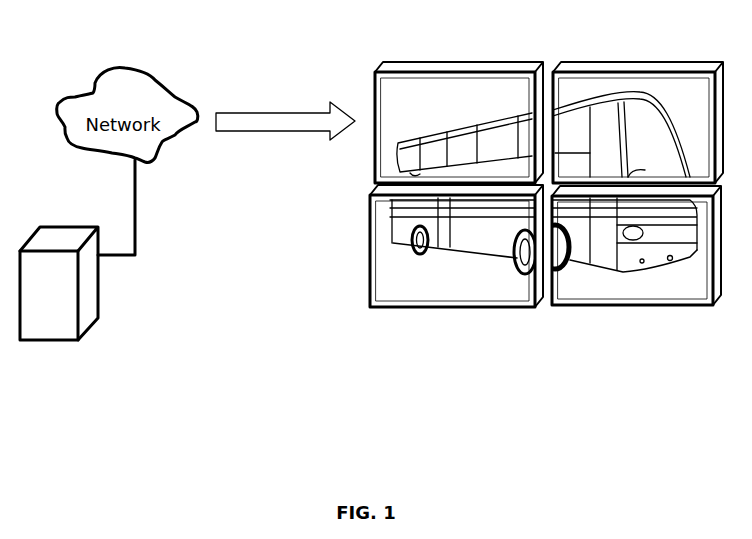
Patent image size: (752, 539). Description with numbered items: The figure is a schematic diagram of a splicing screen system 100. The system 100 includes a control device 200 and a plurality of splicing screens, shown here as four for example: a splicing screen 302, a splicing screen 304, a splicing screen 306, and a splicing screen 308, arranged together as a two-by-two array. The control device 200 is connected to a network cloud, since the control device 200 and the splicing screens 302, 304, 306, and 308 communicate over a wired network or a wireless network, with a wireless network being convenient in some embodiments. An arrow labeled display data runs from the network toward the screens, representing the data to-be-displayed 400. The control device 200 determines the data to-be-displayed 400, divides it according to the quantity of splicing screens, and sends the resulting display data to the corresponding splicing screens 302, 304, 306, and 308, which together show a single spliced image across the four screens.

The splicing screen system 100 is at (370, 428).
The control device 200 is at (40, 341).
The splicing screen 302 is at (442, 62).
The splicing screen 304 is at (628, 62).
The splicing screen 306 is at (440, 309).
The splicing screen 308 is at (628, 307).
The data to-be-displayed 400 is at (285, 125).